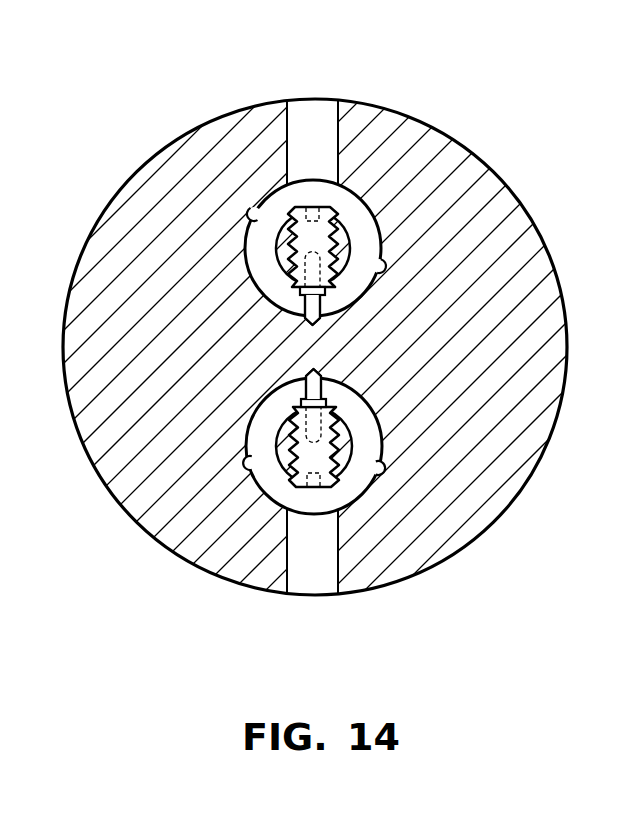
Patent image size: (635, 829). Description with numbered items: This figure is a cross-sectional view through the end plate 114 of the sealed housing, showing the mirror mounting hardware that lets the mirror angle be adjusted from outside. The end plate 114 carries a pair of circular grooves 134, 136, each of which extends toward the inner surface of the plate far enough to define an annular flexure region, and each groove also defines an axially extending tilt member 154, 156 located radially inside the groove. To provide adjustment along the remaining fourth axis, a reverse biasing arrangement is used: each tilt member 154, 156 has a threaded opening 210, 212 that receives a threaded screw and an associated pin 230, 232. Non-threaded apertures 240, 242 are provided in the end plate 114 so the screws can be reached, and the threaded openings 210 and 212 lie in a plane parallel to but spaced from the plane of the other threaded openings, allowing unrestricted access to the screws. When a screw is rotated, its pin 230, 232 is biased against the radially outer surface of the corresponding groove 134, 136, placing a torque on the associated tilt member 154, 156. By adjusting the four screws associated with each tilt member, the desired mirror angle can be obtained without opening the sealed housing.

The end plate 114 is at (460, 142).
The circular groove 134 is at (253, 220).
The circular groove 136 is at (252, 465).
The tilt member 154 is at (379, 240).
The tilt member 156 is at (383, 423).
The threaded opening 210 is at (324, 240).
The threaded opening 212 is at (332, 447).
The pin 230 is at (325, 301).
The pin 232 is at (306, 391).
The non-threaded aperture 240 is at (288, 563).
The non-threaded aperture 242 is at (288, 118).